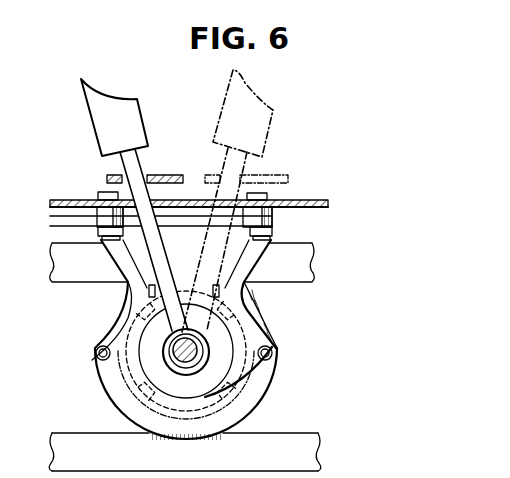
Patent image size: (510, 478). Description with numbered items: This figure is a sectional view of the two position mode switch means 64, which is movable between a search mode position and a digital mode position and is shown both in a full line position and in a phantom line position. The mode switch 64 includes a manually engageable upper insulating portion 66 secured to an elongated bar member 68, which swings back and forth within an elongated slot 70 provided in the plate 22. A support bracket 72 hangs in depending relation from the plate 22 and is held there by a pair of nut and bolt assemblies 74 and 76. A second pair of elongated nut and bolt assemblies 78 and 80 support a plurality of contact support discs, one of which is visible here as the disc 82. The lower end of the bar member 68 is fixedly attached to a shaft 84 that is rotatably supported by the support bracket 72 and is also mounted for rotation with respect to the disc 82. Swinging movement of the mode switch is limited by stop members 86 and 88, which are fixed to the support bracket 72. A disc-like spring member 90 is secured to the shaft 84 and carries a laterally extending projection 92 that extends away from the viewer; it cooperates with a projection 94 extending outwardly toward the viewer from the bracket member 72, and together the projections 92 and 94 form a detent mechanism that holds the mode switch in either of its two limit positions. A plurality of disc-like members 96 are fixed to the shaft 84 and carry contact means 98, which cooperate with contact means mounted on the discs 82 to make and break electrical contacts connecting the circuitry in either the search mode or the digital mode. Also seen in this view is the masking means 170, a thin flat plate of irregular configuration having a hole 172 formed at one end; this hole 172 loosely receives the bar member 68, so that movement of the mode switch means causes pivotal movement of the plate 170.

The plate 22 is at (55, 201).
The mode switch means 64 is at (128, 93).
The upper insulating portion 66 is at (135, 120).
The bar member 68 is at (143, 157).
The slot 70 is at (177, 208).
The support bracket 72 is at (270, 246).
The nut and bolt assembly 74 is at (97, 232).
The nut and bolt assembly 76 is at (278, 232).
The elongated nut and bolt assembly 78 is at (98, 359).
The elongated nut and bolt assembly 80 is at (272, 352).
The contact support disc 82 is at (260, 312).
The shaft 84 is at (173, 350).
The stop member 86 is at (149, 285).
The stop member 88 is at (219, 285).
The spring member 90 is at (230, 363).
The projection 92 is at (207, 390).
The projection 94 is at (168, 412).
The disc-like member 96 is at (127, 333).
The contact means 98 is at (140, 320).
The masking means 170 is at (107, 180).
The hole 172 is at (146, 176).